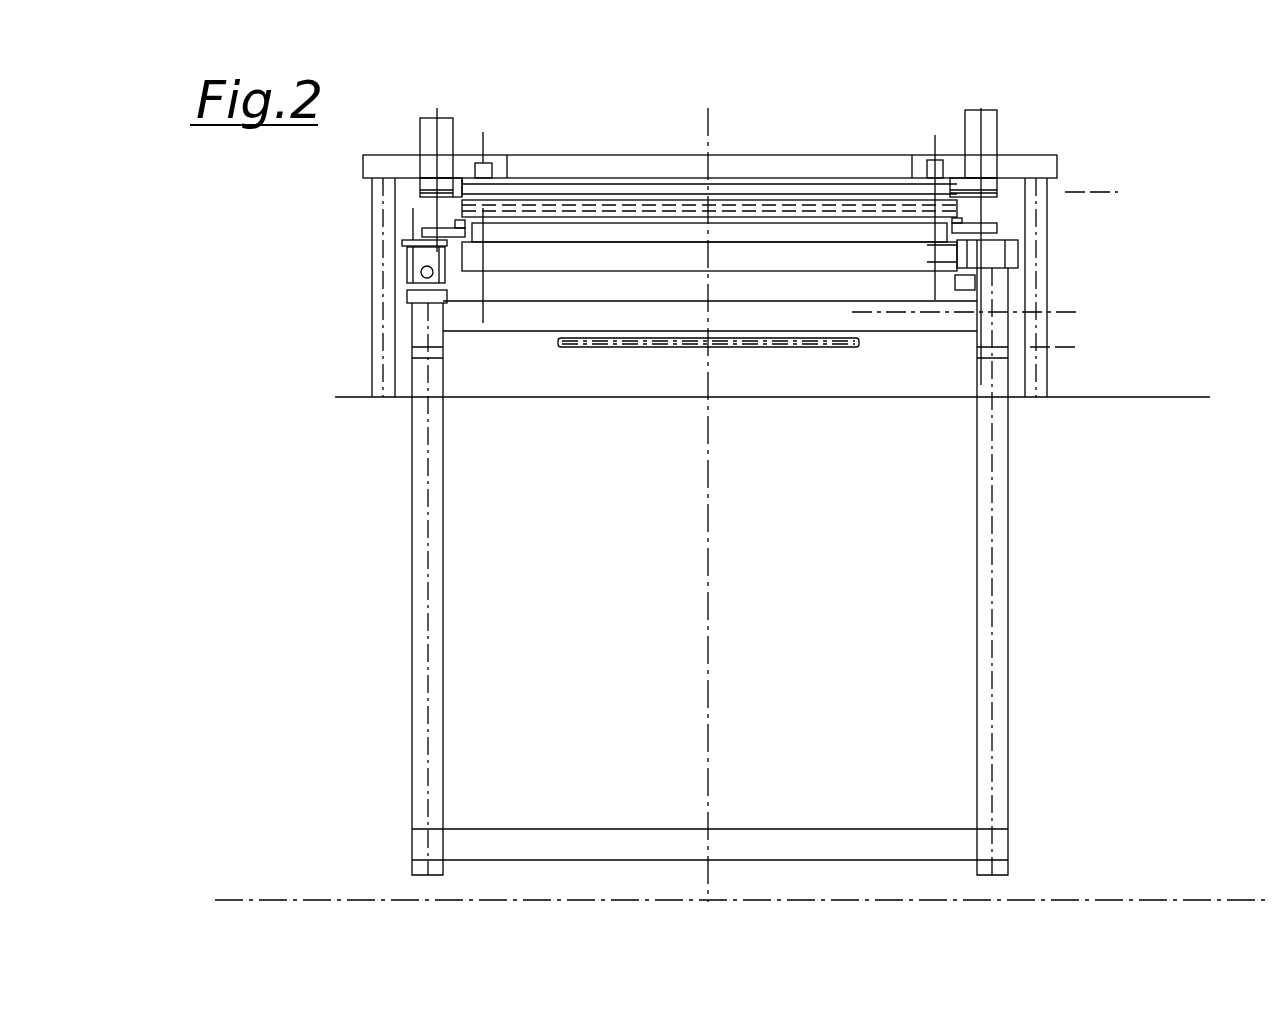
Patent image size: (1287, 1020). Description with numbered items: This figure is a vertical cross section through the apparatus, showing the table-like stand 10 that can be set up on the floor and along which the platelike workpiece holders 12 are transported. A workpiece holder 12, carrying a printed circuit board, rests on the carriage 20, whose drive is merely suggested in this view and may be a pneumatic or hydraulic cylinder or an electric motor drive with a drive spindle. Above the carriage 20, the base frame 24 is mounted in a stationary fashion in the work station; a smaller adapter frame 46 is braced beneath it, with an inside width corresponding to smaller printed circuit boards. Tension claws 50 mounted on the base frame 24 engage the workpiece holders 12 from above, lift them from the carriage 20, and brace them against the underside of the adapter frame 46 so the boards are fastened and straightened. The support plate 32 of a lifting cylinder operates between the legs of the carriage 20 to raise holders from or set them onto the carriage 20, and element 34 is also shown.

The table-like stand 10 is at (412, 516).
The workpiece holder 12 is at (580, 191).
The carriage 20 is at (757, 253).
The frame 24 is at (950, 165).
The support plate 32 is at (781, 345).
The bracket 34 is at (960, 292).
The adapter frame 46 is at (520, 183).
The tension claw 50 is at (422, 190).